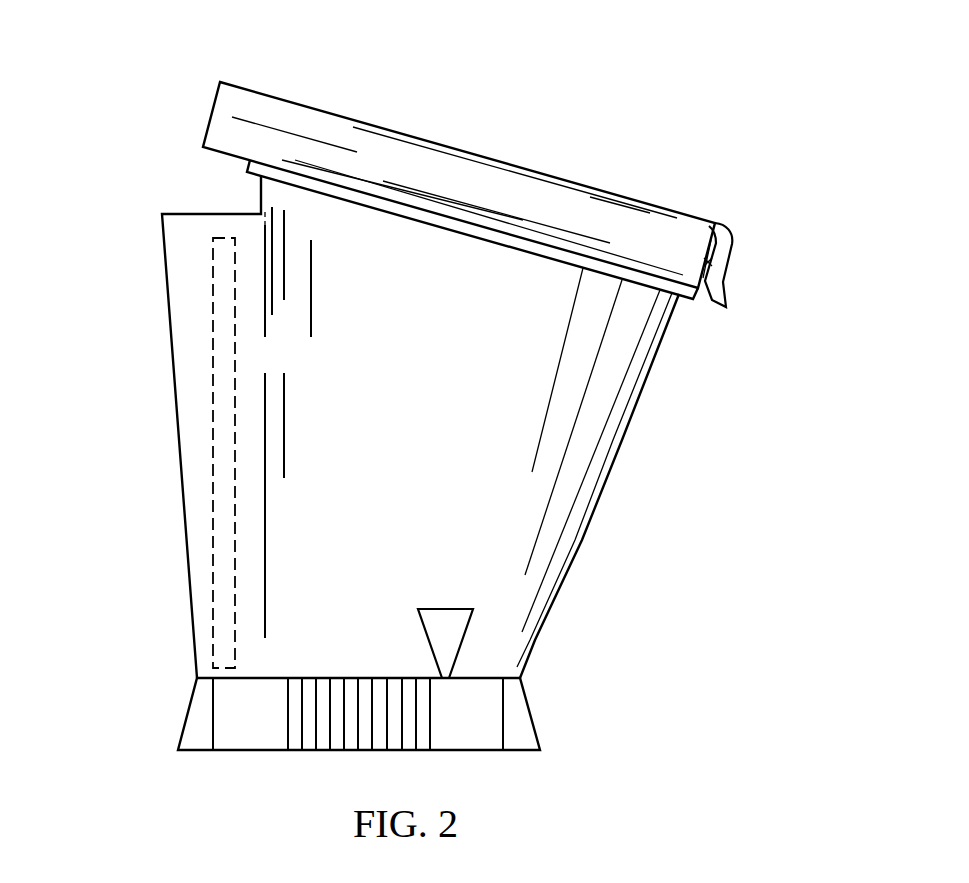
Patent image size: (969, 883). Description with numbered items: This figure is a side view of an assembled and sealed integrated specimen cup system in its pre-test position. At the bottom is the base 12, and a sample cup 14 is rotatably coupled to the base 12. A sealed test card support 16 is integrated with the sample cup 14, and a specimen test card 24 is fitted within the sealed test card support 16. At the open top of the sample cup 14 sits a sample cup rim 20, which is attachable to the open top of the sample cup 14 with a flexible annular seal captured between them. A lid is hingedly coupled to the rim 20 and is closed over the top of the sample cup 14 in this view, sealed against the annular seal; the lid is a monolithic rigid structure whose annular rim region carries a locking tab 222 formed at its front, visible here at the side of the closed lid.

The base 12 is at (185, 710).
The sample cup 14 is at (578, 545).
The sealed test card support 16 is at (185, 550).
The sample cup rim 20 is at (428, 137).
The specimen test card 24 is at (220, 389).
The locking tab 222 is at (732, 255).